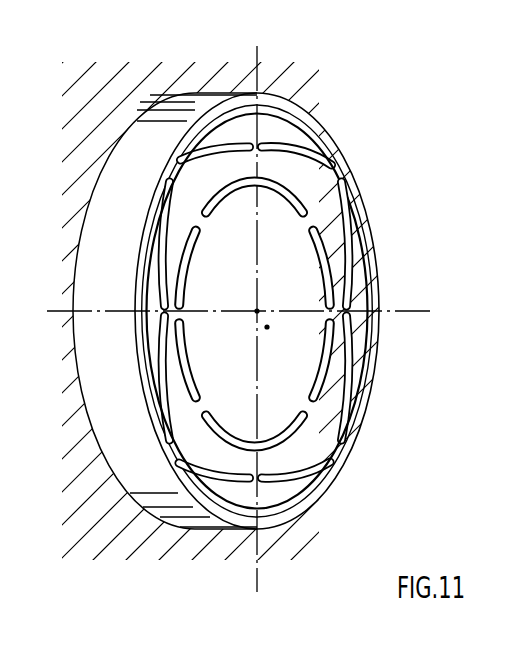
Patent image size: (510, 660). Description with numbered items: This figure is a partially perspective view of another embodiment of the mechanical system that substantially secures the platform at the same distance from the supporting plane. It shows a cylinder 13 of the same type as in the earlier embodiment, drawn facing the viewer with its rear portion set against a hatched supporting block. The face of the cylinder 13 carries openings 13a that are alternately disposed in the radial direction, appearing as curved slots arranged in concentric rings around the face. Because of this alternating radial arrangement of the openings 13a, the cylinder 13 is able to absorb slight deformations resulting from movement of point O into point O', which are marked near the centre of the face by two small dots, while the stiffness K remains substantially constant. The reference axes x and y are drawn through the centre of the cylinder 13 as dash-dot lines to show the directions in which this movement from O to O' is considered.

The cylinder 13 is at (226, 311).
The openings 13a is at (347, 204).
The point O is at (244, 296).
The point O' is at (278, 344).
The x axis x is at (231, 308).
The y axis y is at (260, 314).